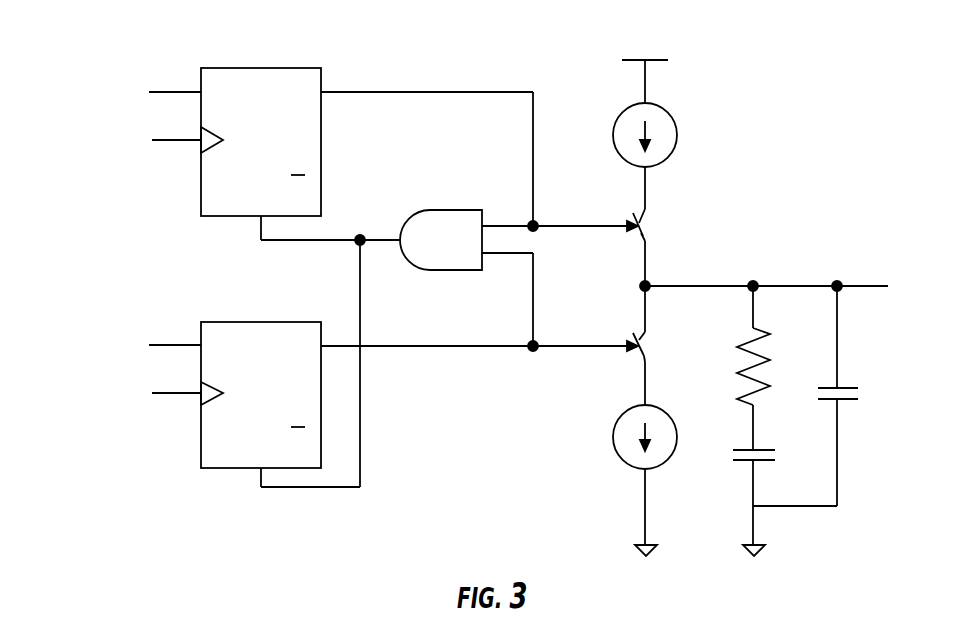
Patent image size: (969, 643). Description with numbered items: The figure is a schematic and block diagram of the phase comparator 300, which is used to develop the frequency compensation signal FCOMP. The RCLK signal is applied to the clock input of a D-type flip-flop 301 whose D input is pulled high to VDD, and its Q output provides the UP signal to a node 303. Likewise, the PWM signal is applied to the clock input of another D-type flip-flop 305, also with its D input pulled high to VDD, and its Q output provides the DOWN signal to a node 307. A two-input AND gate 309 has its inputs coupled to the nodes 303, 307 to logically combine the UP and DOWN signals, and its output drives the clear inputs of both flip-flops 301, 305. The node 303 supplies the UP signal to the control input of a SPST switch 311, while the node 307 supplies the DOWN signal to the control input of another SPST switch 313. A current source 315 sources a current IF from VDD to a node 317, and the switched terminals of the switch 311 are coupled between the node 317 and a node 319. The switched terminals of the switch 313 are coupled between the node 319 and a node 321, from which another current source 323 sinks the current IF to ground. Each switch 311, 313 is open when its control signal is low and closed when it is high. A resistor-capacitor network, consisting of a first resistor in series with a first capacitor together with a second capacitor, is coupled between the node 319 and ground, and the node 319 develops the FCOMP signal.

The phase comparator 300 is at (220, 557).
The D-type flip-flop 301 is at (267, 68).
The node 303 is at (507, 92).
The D-type flip-flop 305 is at (263, 322).
The node 307 is at (540, 343).
The 2-input AND gate 309 is at (443, 210).
The SPST switch 311 is at (648, 216).
The SPST switch 313 is at (648, 345).
The current source 315 is at (670, 117).
The node 317 is at (647, 197).
The node 319 is at (675, 286).
The node 321 is at (645, 390).
The current source 323 is at (622, 457).